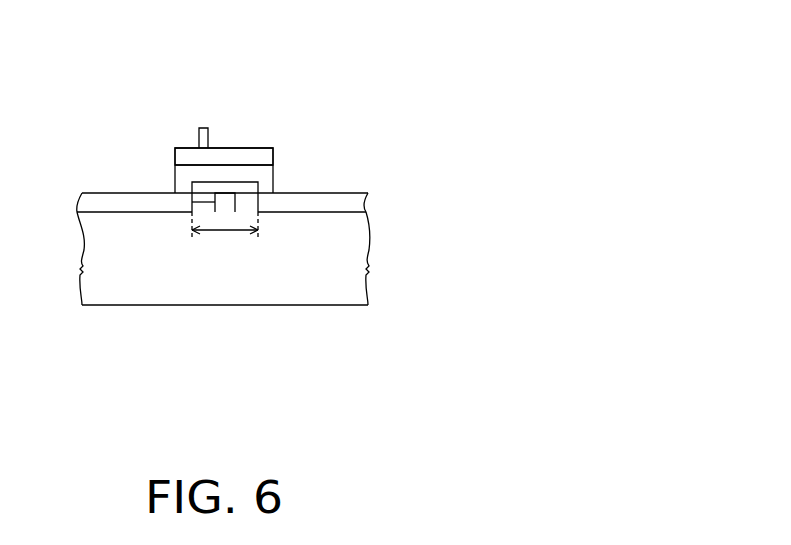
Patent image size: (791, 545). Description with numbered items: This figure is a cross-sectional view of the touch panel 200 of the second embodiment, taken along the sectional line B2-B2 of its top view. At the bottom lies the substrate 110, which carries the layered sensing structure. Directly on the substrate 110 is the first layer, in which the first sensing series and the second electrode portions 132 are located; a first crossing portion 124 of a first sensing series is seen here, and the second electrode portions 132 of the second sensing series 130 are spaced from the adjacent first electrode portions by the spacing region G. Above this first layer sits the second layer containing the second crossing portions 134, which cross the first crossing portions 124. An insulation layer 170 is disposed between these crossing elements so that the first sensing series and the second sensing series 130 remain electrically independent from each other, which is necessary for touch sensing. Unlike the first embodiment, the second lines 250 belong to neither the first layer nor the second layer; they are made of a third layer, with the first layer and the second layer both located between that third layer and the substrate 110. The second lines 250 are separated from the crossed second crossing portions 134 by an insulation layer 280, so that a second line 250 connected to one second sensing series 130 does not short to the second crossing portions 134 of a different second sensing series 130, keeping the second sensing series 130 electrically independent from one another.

The substrate 110 is at (352, 243).
The second electrode portions 132 is at (322, 203).
The second crossing portions 134 is at (245, 175).
The second sensing series 130 is at (355, 68).
The insulation layer 280 is at (187, 157).
The second lines 250 is at (203, 128).
The first crossing portions 124 is at (236, 202).
The insulation layer 170 is at (205, 202).
The spacing region G is at (225, 238).
The sectional line B2- B2 is at (228, 124).
The touch panel 200 is at (261, 208).